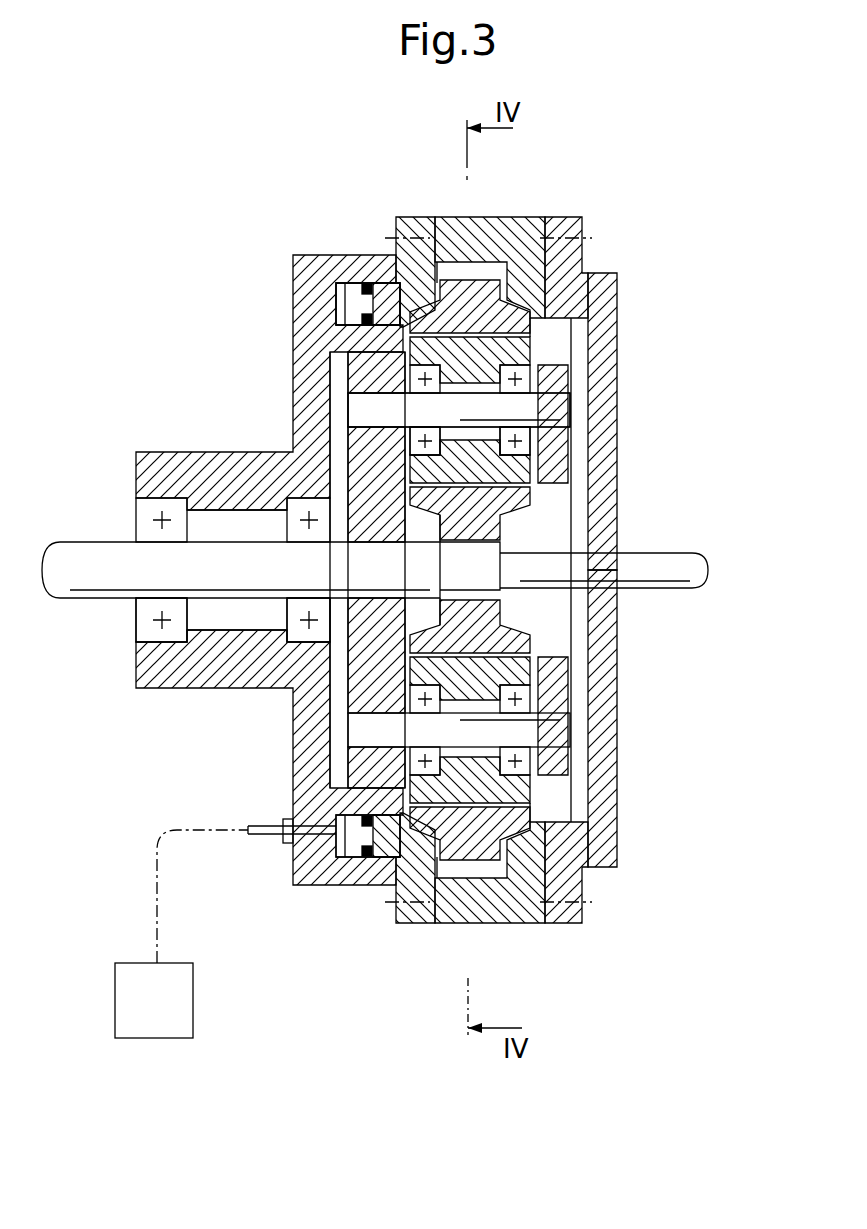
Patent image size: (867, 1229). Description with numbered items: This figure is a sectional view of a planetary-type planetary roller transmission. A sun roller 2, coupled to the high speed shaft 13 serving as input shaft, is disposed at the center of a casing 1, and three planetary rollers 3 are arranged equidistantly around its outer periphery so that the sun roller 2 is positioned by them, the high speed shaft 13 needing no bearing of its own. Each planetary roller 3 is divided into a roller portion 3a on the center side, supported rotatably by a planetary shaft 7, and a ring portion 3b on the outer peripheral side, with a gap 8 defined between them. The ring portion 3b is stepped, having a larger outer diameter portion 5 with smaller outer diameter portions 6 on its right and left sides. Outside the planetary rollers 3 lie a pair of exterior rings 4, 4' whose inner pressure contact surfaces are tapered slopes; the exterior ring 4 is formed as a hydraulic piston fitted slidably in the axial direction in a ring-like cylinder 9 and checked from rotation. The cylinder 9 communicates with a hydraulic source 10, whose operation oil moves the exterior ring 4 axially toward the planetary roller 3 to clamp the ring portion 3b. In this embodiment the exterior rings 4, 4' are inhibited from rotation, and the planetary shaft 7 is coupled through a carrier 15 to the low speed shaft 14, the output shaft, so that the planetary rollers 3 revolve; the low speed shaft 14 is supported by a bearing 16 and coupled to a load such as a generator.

The casing 1 is at (622, 781).
The sun roller 2 is at (472, 596).
The planetary roller 3 is at (545, 348).
The roller portion 3a is at (522, 468).
The ring portion 3b is at (508, 505).
The exterior ring 4 is at (400, 246).
The exterior ring 4' is at (530, 241).
The larger outer diameter portion 5 is at (475, 293).
The smaller outer diameter portion 6 is at (570, 292).
The planetary shaft 7 is at (352, 405).
The gap 8 is at (412, 470).
The ring-like cylinder 9 is at (336, 302).
The hydraulic source 10 is at (193, 1003).
The high speed shaft 13 is at (680, 592).
The low speed shaft 14 is at (72, 600).
The carrier 15 is at (355, 690).
The bearing 16 is at (168, 645).